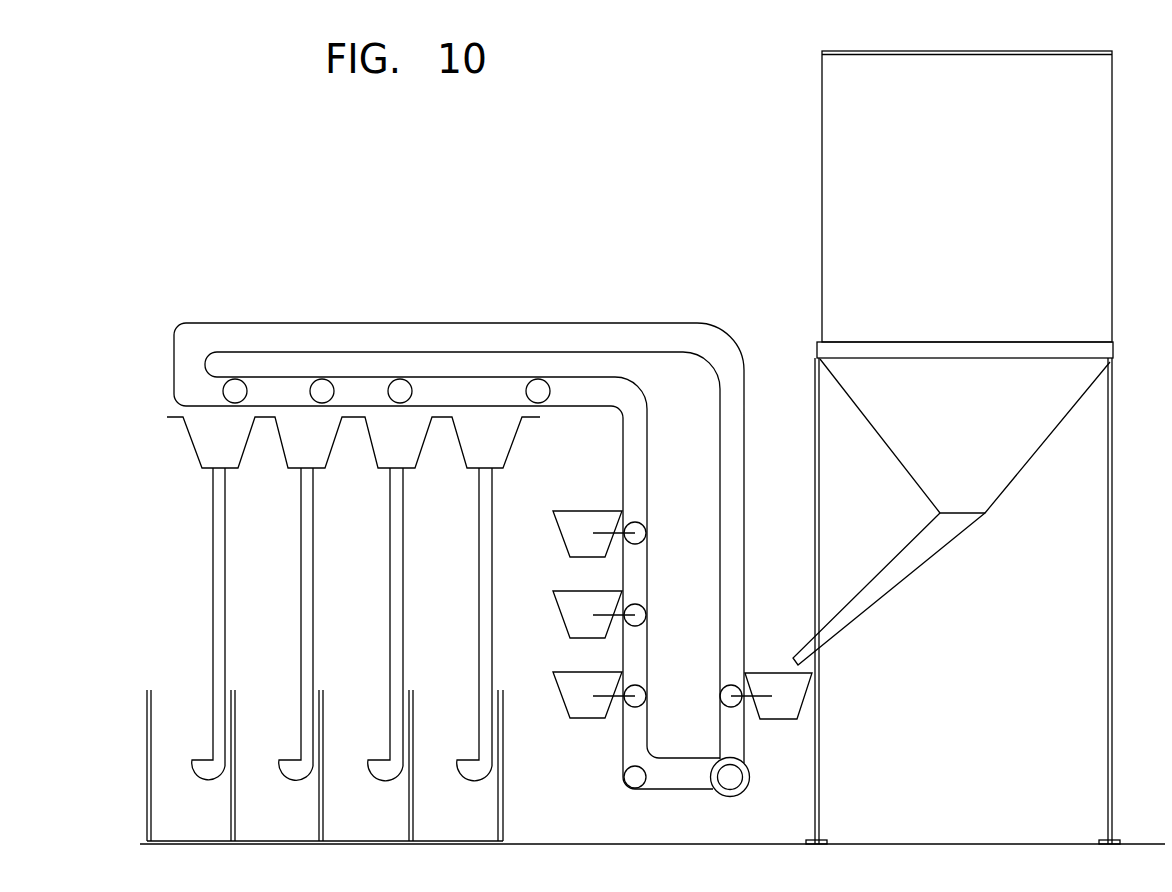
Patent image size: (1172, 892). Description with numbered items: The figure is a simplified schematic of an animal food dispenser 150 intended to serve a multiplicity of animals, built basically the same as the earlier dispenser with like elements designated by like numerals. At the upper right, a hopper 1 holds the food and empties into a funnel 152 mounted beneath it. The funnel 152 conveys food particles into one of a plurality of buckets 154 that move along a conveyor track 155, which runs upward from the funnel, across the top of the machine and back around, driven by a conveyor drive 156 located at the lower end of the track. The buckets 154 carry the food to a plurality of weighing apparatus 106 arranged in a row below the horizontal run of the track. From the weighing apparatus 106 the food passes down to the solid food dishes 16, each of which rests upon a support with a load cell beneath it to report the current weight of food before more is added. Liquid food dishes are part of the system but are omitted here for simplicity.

The hopper 1 is at (1093, 143).
The solid food dish 16 is at (200, 750).
The weighing apparatus 106 is at (177, 434).
The animal food dispenser 150 is at (490, 280).
The funnel 152 is at (929, 414).
The buckets 154 is at (783, 693).
The conveyor track 155 is at (638, 333).
The conveyor drive 156 is at (711, 777).